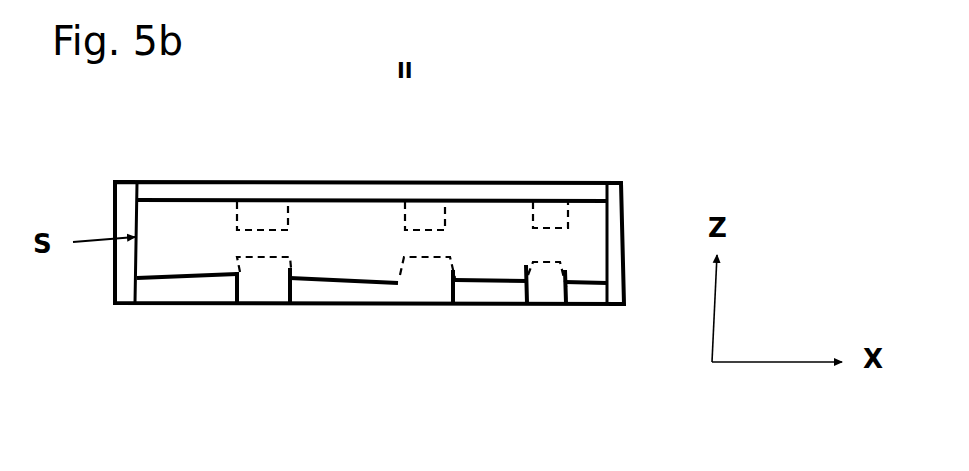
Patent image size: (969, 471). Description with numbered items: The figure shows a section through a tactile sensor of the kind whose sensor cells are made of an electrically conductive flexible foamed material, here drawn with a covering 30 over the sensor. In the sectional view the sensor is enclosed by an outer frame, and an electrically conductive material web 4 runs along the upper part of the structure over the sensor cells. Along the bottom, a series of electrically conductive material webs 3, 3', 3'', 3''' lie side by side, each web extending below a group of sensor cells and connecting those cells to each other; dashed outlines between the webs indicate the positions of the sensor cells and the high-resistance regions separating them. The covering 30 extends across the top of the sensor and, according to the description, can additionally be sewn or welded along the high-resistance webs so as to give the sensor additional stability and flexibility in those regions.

The covering 30 is at (367, 192).
The electrically conductive material web 4 is at (453, 192).
The electrically conductive material web 3 is at (187, 333).
The electrically conductive material web 3' is at (344, 339).
The electrically conductive material web 3'' is at (490, 328).
The fourth sensor element 3''' is at (582, 342).